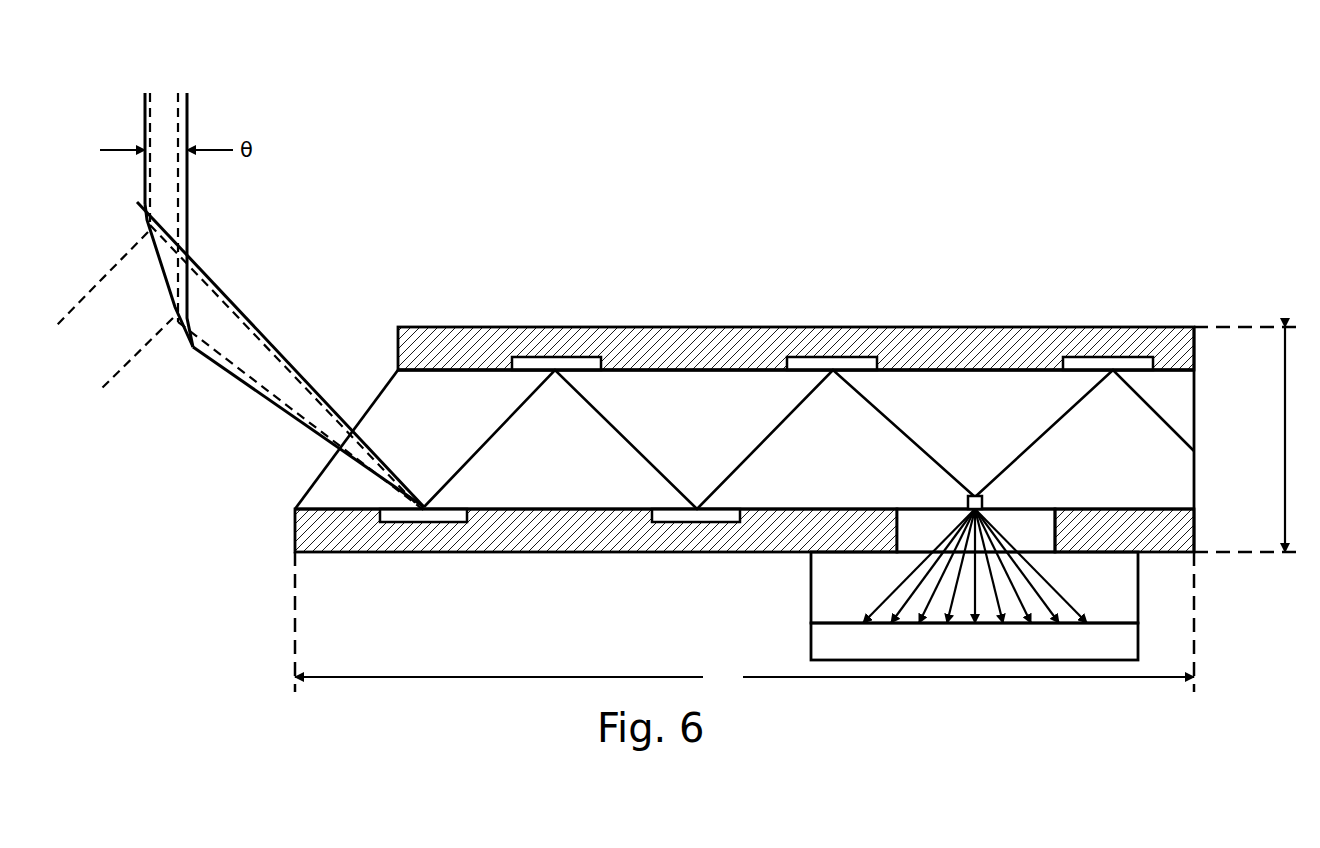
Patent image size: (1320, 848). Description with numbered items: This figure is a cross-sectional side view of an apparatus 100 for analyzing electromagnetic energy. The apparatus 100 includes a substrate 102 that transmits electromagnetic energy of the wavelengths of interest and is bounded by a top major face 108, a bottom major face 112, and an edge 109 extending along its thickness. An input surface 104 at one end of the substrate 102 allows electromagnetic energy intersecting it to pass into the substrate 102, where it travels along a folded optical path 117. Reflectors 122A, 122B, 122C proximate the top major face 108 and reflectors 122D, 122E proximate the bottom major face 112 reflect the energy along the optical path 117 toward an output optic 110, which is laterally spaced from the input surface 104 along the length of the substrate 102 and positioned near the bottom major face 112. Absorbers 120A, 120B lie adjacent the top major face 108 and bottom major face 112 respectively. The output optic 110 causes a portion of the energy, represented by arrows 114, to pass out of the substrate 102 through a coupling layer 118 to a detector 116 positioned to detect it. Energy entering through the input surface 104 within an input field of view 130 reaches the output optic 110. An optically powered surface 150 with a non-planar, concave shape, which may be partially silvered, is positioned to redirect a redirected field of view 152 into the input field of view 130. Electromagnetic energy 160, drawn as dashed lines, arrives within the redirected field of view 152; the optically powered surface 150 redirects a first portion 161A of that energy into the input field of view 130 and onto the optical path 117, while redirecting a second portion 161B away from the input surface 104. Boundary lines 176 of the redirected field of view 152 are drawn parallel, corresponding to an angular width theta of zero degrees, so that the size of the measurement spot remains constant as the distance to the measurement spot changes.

The apparatus 100 is at (710, 178).
The substrate 102 is at (1170, 402).
The input surface 104 is at (385, 380).
The top major face 108 is at (670, 370).
The edge 109 is at (1194, 483).
The output optic 110 is at (970, 494).
The bottom major face 112 is at (1107, 509).
The arrows 114 is at (1057, 593).
The detector 116 is at (811, 648).
The optical path 117 is at (493, 427).
The coupling layer 118 is at (811, 590).
The absorber 120A is at (970, 327).
The absorber 120B is at (363, 552).
The reflector 122A is at (559, 357).
The reflector 122B is at (845, 357).
The reflector 122C is at (1112, 357).
The reflector 122D is at (432, 528).
The reflector 122E is at (688, 530).
The input field of view 130 is at (302, 375).
The optically powered surface 150 is at (191, 349).
The redirected field of view 152 is at (190, 173).
The electromagnetic energy 160 is at (145, 125).
The first portion 161A is at (213, 297).
The second portion 161B is at (130, 253).
The boundary lines 176 is at (143, 103).